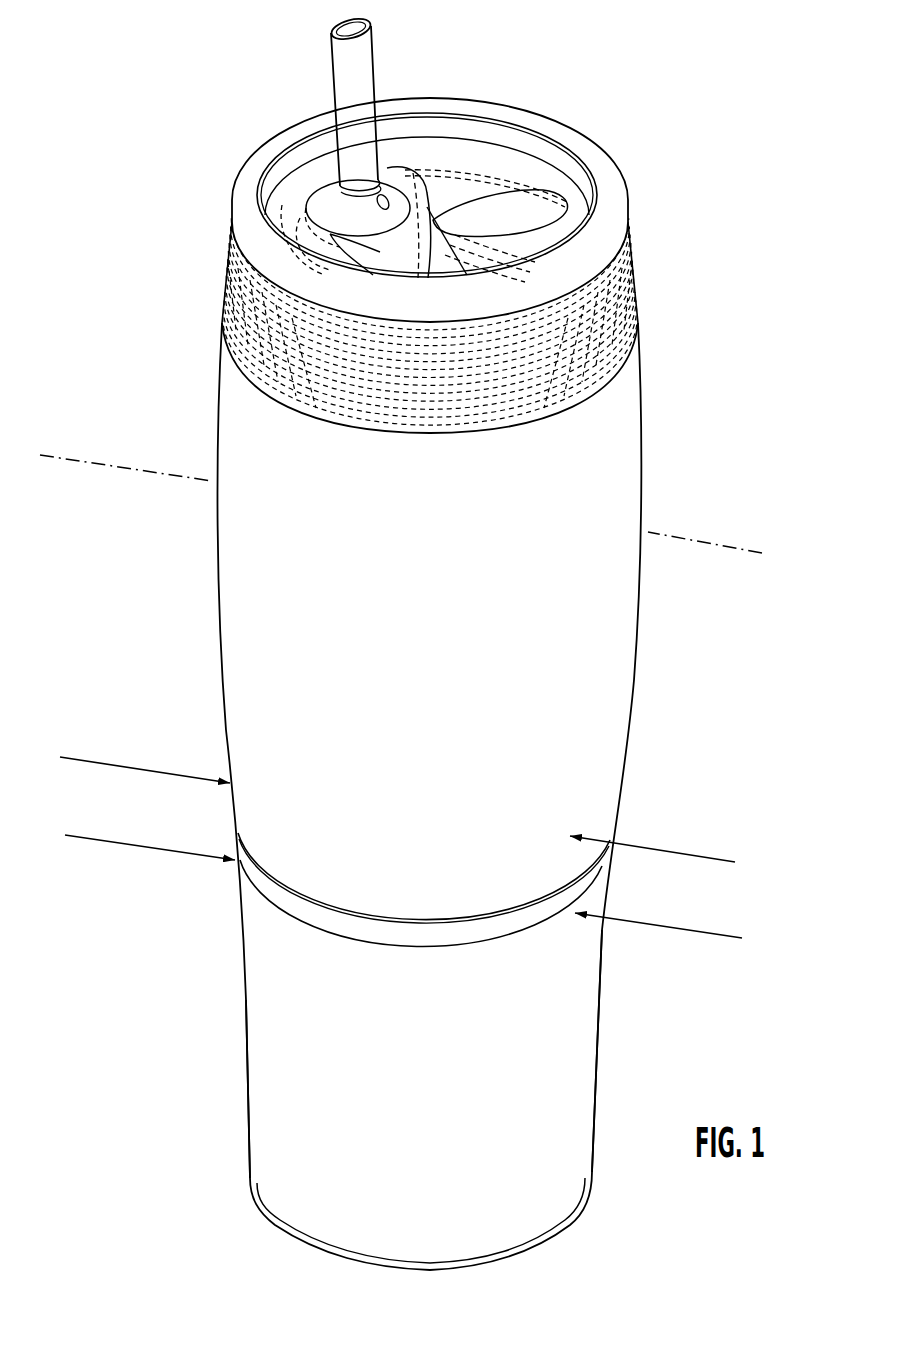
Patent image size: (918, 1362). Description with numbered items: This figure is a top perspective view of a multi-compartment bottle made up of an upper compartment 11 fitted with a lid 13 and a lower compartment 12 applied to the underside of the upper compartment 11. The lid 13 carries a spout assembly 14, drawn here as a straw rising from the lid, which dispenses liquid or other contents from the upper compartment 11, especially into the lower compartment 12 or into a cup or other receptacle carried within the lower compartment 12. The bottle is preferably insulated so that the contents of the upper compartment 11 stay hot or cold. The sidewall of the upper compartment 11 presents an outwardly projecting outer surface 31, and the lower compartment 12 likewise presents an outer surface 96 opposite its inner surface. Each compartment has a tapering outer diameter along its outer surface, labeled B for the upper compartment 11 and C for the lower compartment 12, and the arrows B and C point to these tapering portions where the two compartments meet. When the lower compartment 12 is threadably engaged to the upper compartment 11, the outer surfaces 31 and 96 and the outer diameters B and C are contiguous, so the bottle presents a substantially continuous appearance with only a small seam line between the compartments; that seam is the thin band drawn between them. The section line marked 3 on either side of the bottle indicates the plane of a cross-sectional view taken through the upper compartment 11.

The upper compartment 11 is at (222, 645).
The lower compartment 12 is at (268, 1157).
The lid 13 is at (606, 162).
The spout assembly 14 is at (390, 122).
The outer surface 31 is at (416, 883).
The outer surface 96 is at (416, 1017).
The section line 3- 3 is at (40, 455).
The tapering outer diameter B is at (708, 857).
The tapering outer diameter C is at (706, 934).